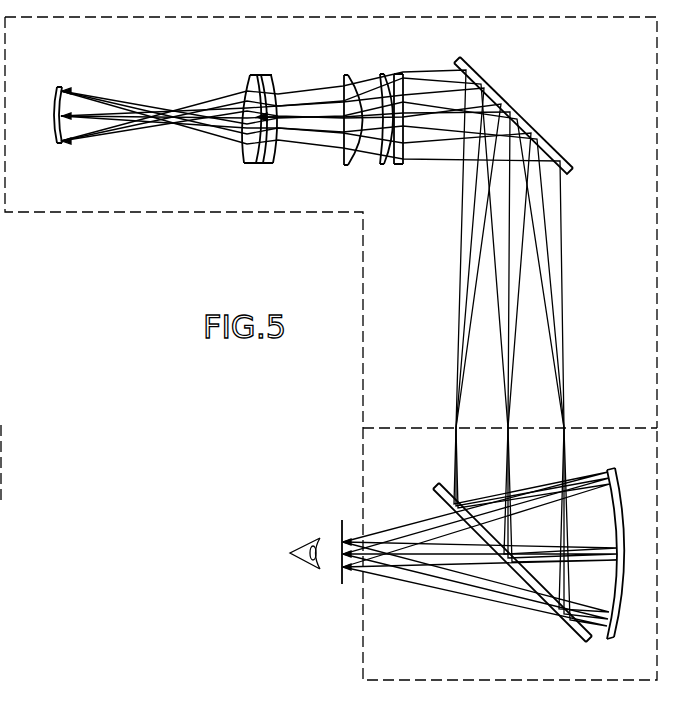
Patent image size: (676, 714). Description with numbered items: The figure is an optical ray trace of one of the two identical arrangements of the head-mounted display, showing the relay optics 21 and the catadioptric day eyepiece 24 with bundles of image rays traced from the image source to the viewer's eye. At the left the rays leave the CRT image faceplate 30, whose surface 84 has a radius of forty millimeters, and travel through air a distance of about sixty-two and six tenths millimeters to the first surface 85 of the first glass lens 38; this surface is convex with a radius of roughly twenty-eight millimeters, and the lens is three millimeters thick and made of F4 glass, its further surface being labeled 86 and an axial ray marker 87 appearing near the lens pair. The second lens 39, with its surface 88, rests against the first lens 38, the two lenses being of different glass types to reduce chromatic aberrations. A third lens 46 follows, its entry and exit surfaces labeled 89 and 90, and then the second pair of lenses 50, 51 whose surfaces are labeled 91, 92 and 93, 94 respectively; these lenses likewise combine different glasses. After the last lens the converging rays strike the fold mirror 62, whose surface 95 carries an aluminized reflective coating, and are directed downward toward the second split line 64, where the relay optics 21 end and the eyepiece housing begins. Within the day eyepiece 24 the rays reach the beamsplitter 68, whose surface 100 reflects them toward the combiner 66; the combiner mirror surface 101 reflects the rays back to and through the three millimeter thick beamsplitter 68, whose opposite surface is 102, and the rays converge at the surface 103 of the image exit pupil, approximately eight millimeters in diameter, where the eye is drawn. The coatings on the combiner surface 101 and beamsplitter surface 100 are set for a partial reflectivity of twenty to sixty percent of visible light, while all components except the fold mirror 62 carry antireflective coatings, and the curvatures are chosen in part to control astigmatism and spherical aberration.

The relay optics housing 21 is at (296, 229).
The day eyepiece 24 is at (346, 452).
The fiber optic faceplate 30 is at (50, 102).
The faceplate surface 84 is at (70, 90).
The front surface of lens 38 86 is at (244, 94).
The first surface of the first lens 85 is at (245, 146).
The optical axis 87 is at (279, 117).
The first lens 38 is at (242, 134).
The rear surface of lens 39 88 is at (279, 153).
The second lens 39 is at (287, 135).
The third lens 46 is at (340, 118).
The front surface of lens 46 89 is at (344, 83).
The rear surface of lens 46 90 is at (351, 80).
The lens of second pair of lenses 50 is at (380, 124).
The front surface of lens 50 91 is at (380, 148).
The rear surface of lens 50 92 is at (388, 86).
The lens of second pair of lenses 51 is at (418, 136).
The surface of lens 51 93 is at (405, 93).
The surface of lens 51 94 is at (407, 154).
The fold mirror 62 is at (501, 102).
The fold mirror surface 95 is at (450, 68).
The second split line 64 is at (382, 428).
The beamsplitter 68 is at (484, 537).
The beamsplitter surface 100 is at (451, 495).
The beam splitter surface 102 is at (447, 502).
The combiner 66 is at (609, 571).
The combiner mirror surface 101 is at (609, 498).
The image exit pupil surface 103 is at (342, 522).